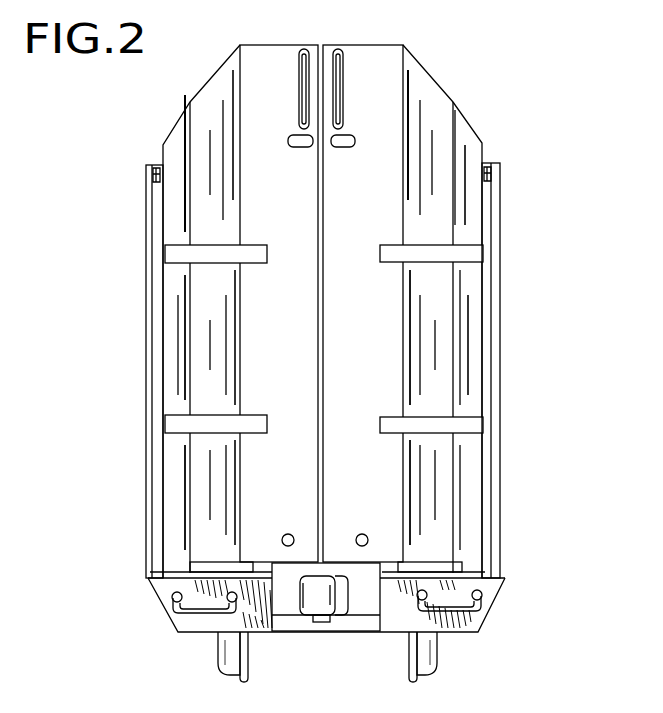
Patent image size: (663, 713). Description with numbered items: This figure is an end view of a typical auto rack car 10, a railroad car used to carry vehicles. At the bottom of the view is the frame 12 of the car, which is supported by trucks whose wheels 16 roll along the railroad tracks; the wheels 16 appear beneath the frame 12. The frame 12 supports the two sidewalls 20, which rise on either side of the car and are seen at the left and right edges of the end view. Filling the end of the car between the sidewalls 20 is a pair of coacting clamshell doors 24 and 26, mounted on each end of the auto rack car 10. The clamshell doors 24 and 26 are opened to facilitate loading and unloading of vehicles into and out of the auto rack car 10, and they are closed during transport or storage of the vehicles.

The auto rack car 10 is at (510, 222).
The frame 12 is at (492, 585).
The wheels 16 is at (437, 643).
The sidewalls 20 is at (147, 326).
The clamshell door 24 is at (385, 360).
The clamshell door 26 is at (297, 360).